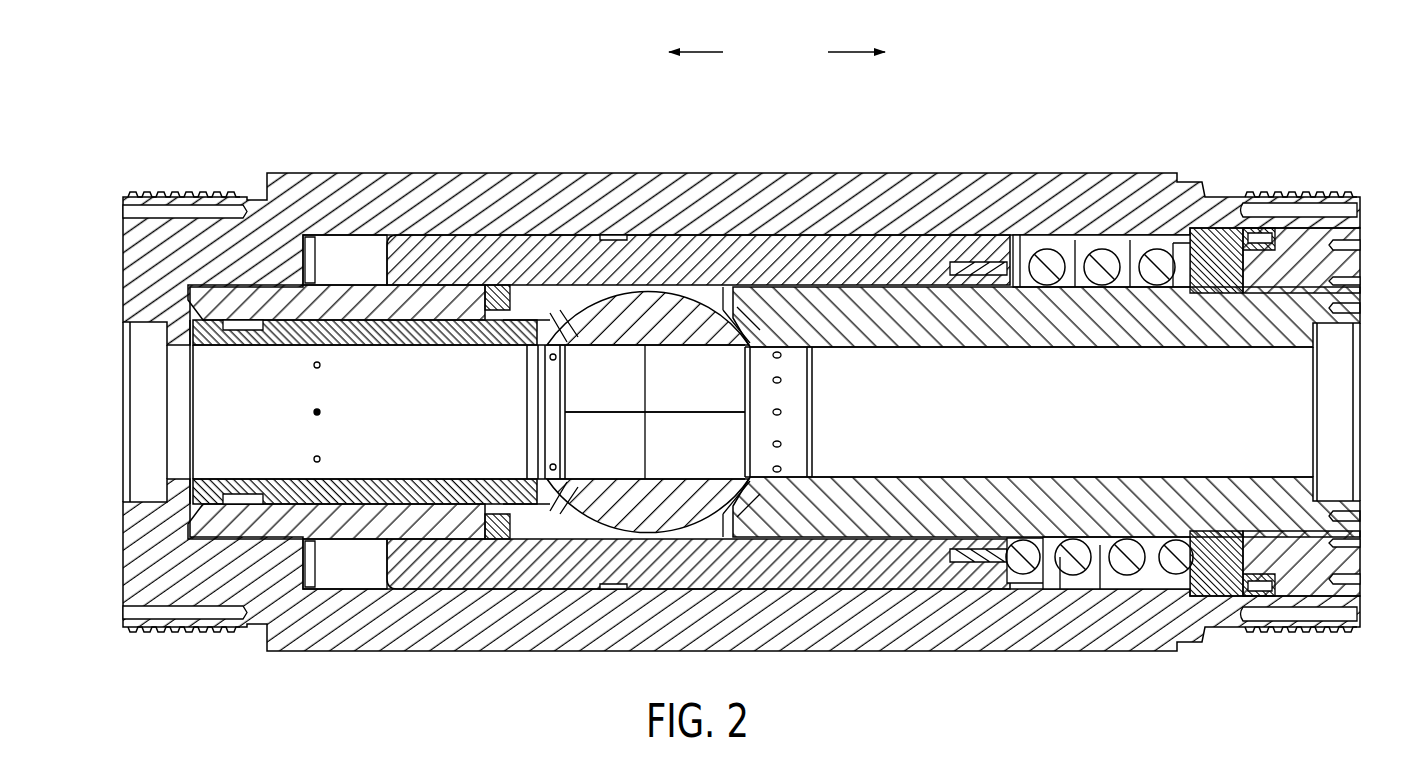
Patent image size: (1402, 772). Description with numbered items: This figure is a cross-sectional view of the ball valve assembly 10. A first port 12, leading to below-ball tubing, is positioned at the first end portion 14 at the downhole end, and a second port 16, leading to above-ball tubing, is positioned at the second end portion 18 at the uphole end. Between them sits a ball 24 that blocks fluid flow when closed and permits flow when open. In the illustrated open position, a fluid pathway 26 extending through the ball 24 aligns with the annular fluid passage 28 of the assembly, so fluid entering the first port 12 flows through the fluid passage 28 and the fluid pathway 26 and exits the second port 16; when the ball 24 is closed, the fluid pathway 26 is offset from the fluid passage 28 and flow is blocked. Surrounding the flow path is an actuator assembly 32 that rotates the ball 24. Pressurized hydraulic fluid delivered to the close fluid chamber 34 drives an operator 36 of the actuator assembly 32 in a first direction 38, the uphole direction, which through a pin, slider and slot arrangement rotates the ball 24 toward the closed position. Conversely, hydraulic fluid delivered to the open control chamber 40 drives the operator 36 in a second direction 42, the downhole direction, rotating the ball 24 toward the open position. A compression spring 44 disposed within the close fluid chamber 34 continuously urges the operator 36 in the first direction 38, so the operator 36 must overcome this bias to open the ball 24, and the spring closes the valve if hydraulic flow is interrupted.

The ball valve assembly 10 is at (737, 130).
The first port 12 is at (1369, 325).
The first end portion 14 is at (1292, 178).
The second port 16 is at (118, 381).
The second end portion 18 is at (178, 170).
The ball 24 is at (678, 330).
The fluid pathway 26 is at (603, 347).
The fluid passage 28 is at (420, 348).
The actuator assembly 32 is at (480, 146).
The close fluid chamber 34 is at (1126, 246).
The operator 36 is at (667, 257).
The first direction 38 is at (700, 52).
The open control chamber 40 is at (360, 259).
The second direction 42 is at (852, 52).
The compression spring 44 is at (1152, 258).